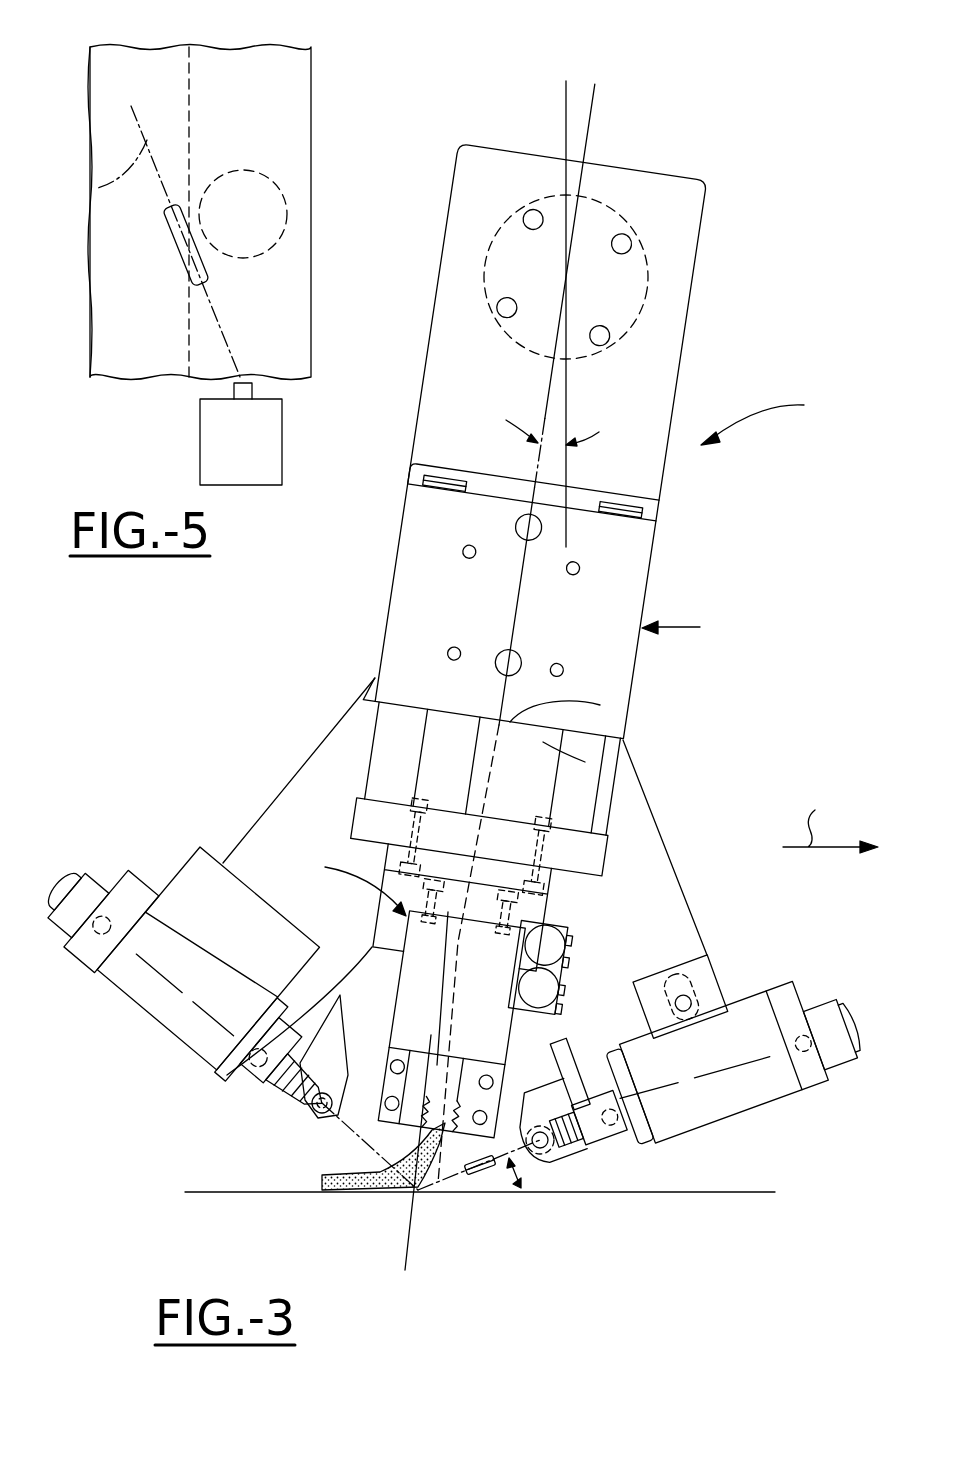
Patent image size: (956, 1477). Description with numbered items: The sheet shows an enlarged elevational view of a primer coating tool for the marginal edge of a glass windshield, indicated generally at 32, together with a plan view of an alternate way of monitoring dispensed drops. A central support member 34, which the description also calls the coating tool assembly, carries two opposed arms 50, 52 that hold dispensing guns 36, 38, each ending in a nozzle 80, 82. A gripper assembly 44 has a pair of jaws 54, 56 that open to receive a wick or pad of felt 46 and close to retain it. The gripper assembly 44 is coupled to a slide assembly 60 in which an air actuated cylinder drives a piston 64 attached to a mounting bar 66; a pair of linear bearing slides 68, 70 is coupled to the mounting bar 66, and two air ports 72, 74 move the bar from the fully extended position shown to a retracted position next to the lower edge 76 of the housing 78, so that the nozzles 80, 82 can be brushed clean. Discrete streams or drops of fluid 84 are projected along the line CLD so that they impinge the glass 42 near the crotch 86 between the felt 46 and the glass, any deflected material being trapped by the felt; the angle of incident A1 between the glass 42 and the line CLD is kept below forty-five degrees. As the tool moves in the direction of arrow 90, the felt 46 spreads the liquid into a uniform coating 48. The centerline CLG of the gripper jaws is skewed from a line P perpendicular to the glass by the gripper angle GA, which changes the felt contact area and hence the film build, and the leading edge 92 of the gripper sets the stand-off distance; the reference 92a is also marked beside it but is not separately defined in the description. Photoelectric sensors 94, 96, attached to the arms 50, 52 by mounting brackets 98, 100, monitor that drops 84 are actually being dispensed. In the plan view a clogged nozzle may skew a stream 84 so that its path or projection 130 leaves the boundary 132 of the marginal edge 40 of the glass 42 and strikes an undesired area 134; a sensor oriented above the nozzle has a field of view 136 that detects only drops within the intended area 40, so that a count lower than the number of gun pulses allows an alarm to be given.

In FIG. 3, the welding gun assembly 32 is at (771, 418).
In FIG. 3, the central support member 34 is at (662, 346).
In FIG. 5, the dispensing gun 36 is at (201, 431).
In FIG. 3, the dispensing gun 36 is at (137, 1005).
In FIG. 3, the dispensing gun 38 is at (770, 1093).
In FIG. 5, the marginal edge 40 is at (287, 81).
In FIG. 5, the glass 42 is at (127, 74).
In FIG. 3, the glass 42 is at (760, 1192).
In FIG. 3, the gripper assembly 44 is at (421, 992).
In FIG. 3, the felt 46 is at (340, 1192).
In FIG. 3, the uniform coating 48 is at (227, 1190).
In FIG. 3, the arm 50 is at (308, 765).
In FIG. 3, the arm 52 is at (683, 888).
In FIG. 3, the jaw 54 is at (425, 1058).
In FIG. 3, the jaw 56 is at (462, 1062).
In FIG. 3, the slide assembly 60 is at (690, 627).
In FIG. 3, the piston 64 is at (600, 705).
In FIG. 3, the mounting bar 66 is at (597, 855).
In FIG. 3, the linear bearing slide 68 is at (585, 802).
In FIG. 3, the linear bearing slide 70 is at (392, 730).
In FIG. 3, the air port 72 is at (513, 523).
In FIG. 3, the air port 74 is at (490, 650).
In FIG. 3, the lower edge 76 is at (585, 762).
In FIG. 3, the housing 78 is at (627, 650).
In FIG. 3, the nozzle 80 is at (292, 1098).
In FIG. 3, the nozzle 82 is at (575, 1147).
In FIG. 5, the discrete streams or drops of fluid 84 is at (175, 249).
In FIG. 3, the discrete streams or drops of fluid 84 is at (400, 1200).
In FIG. 3, the crotch 86 is at (405, 1270).
In FIG. 3, the arrow 90 is at (830, 823).
In FIG. 3, the leading edge 92 is at (453, 1175).
In FIG. 3, the weld seam 92a is at (367, 1140).
In FIG. 3, the sensor 94 is at (313, 1112).
In FIG. 3, the sensor 96 is at (541, 1150).
In FIG. 3, the mounting bracket 98 is at (366, 1032).
In FIG. 3, the mounting bracket 100 is at (540, 1093).
In FIG. 5, the path or projection 130 is at (103, 188).
In FIG. 5, the boundary 132 is at (203, 63).
In FIG. 5, the area 134 is at (101, 166).
In FIG. 5, the field of view 136 is at (267, 182).
In FIG. 3, the line perpendicular to the glass P is at (560, 107).
In FIG. 3, the centerline of the gripper CLG is at (598, 110).
In FIG. 3, the angle of the gripper GA is at (554, 447).
In FIG. 3, the line of dispensing CLD is at (690, 1097).
In FIG. 3, the angle of incident A1 is at (523, 1185).